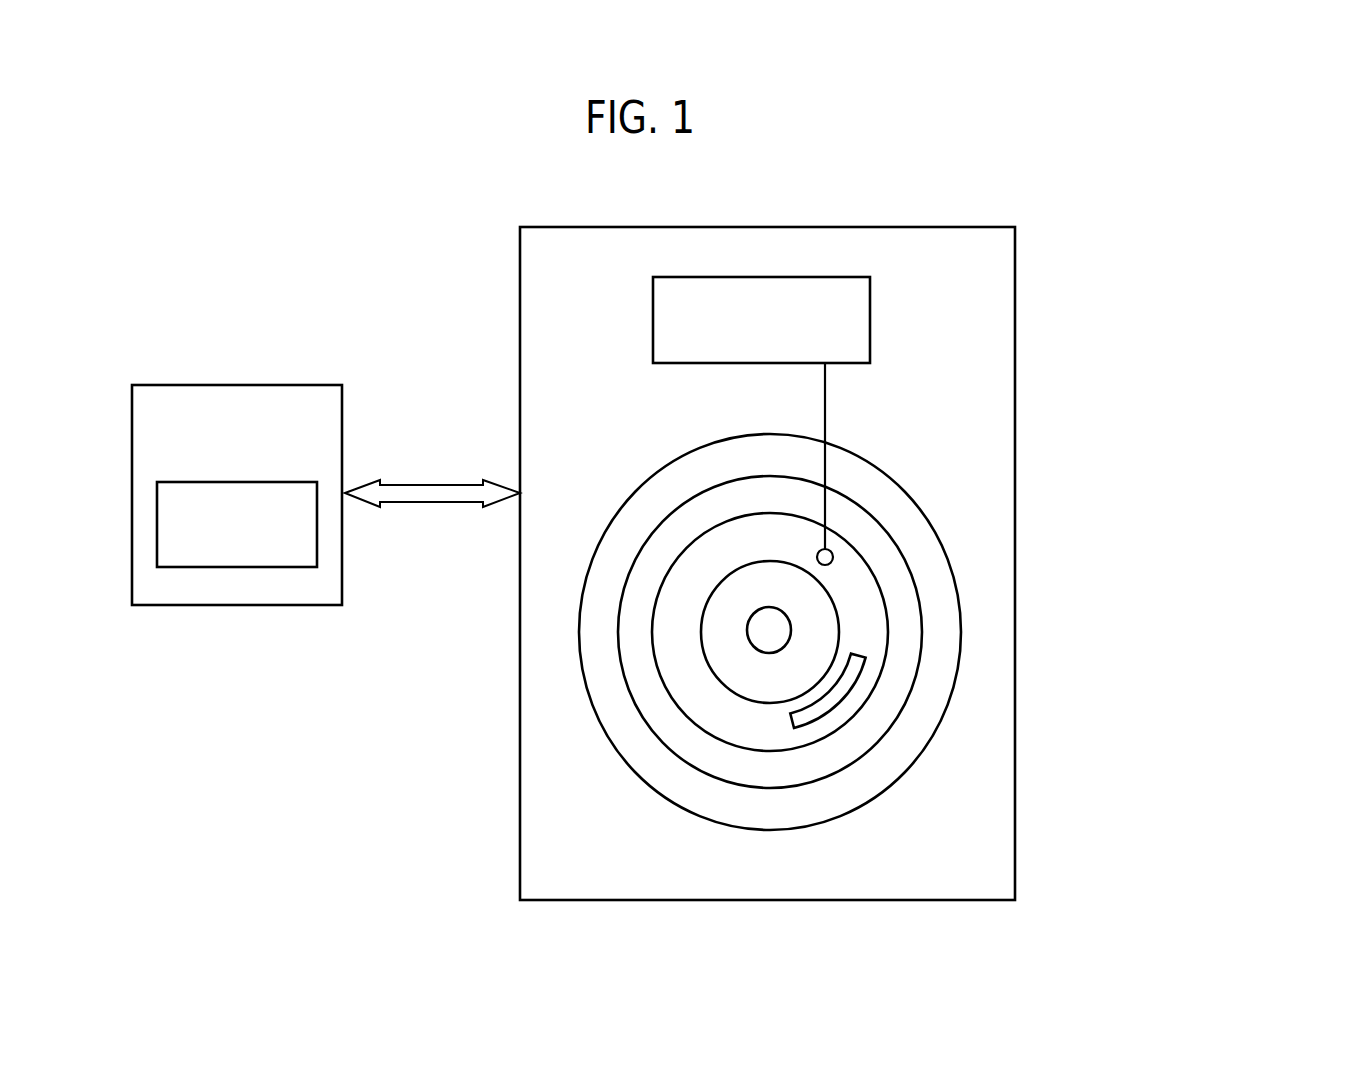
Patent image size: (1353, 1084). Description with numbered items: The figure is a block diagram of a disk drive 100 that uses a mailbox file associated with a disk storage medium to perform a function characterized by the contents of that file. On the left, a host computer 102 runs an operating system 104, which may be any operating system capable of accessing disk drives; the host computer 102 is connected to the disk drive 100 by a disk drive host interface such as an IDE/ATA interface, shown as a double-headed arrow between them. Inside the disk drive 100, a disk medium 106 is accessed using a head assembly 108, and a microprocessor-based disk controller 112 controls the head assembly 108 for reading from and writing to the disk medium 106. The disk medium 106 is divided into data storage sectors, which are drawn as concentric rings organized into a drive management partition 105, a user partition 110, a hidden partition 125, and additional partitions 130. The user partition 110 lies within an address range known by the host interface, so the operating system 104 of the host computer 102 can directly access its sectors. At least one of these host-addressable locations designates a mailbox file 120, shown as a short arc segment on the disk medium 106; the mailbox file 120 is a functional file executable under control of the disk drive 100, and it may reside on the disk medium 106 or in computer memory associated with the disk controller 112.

The disk drive 100 is at (897, 218).
The host computer 102 is at (235, 385).
The operating system 104 is at (233, 567).
The drive management partition 105 is at (928, 703).
The disk medium 106 is at (927, 510).
The head assembly 108 is at (836, 558).
The user partition 110 is at (692, 588).
The disk controller 112 is at (871, 320).
The mailbox file 120 is at (840, 702).
The hidden partition 125 is at (903, 627).
The additional partitions 130 is at (765, 675).